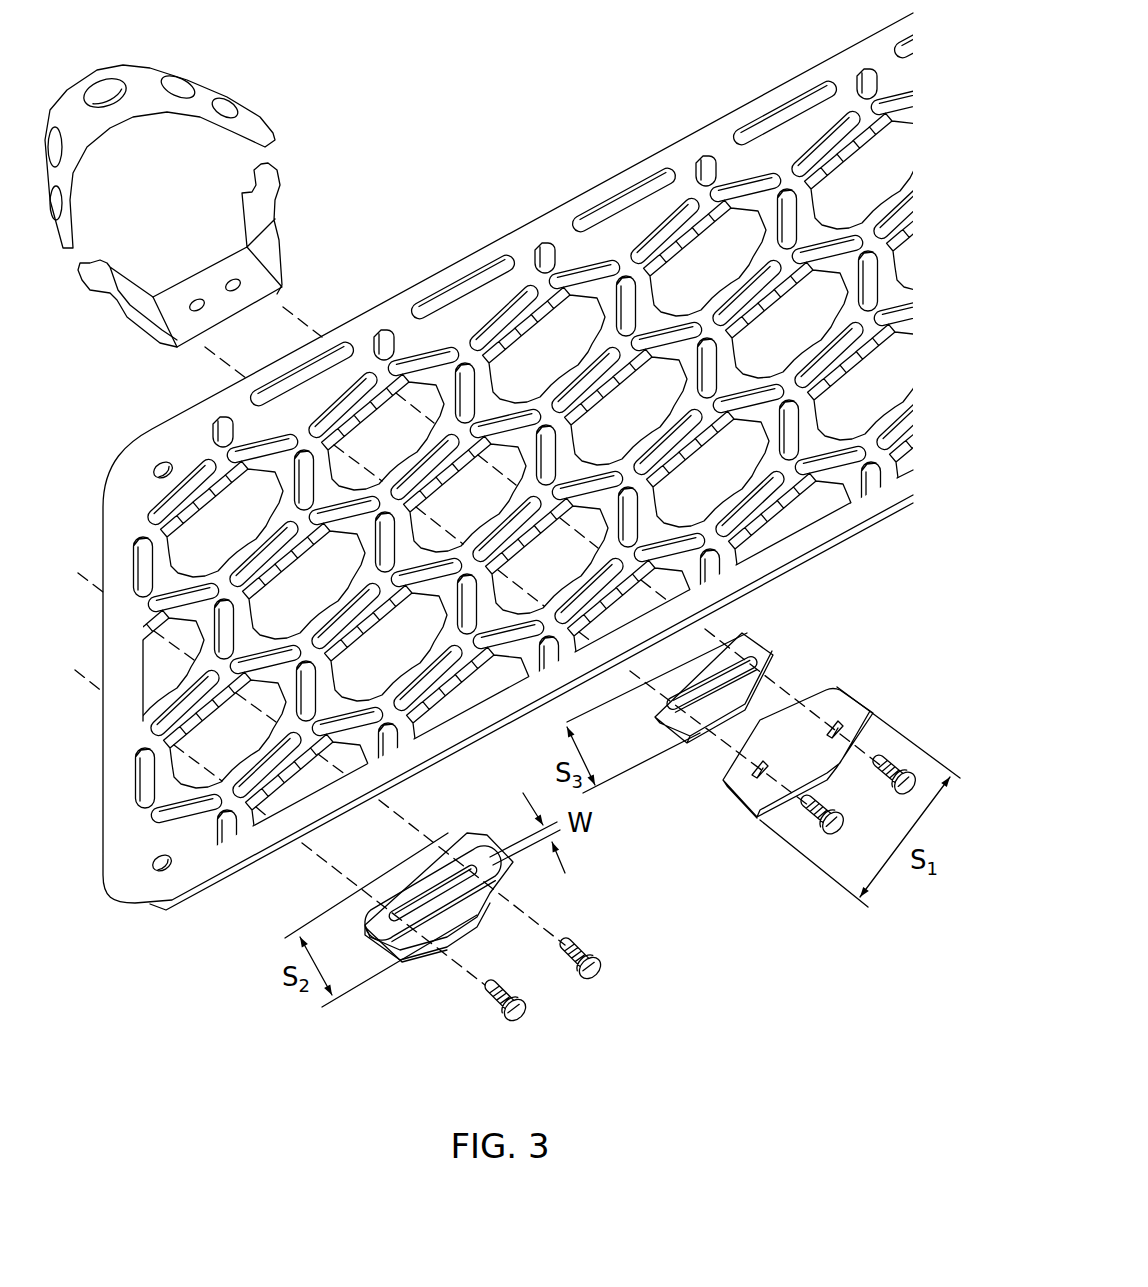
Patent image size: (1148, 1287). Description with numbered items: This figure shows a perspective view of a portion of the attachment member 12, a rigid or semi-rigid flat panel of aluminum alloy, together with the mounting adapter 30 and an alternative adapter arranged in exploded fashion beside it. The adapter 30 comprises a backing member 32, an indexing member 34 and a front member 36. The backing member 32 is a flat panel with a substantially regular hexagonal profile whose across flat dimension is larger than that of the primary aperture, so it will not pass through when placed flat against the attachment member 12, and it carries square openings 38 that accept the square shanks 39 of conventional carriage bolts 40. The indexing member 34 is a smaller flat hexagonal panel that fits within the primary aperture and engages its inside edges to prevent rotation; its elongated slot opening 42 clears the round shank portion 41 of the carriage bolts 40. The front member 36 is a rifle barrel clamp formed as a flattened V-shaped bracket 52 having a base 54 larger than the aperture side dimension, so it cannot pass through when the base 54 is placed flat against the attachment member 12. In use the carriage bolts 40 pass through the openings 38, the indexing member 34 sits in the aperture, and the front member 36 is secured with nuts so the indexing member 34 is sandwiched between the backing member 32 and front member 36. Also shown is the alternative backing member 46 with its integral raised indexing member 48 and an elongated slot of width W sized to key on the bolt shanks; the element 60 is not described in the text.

The attachment member 12 is at (650, 172).
The adapter 30 is at (876, 606).
The backing member 32 is at (773, 723).
The indexing member 34 is at (691, 666).
The front member 36 is at (263, 172).
The openings 38 is at (755, 768).
The square shanks 39 is at (909, 770).
The carriage bolts 40 is at (827, 835).
The round shank portion 41 is at (888, 762).
The opening 42 is at (677, 680).
The backing member 46 is at (500, 878).
The integral indexing member 48 is at (405, 965).
The flattened V-shaped bracket 52 is at (216, 272).
The base 54 is at (197, 347).
The spacer plate 60 is at (481, 905).